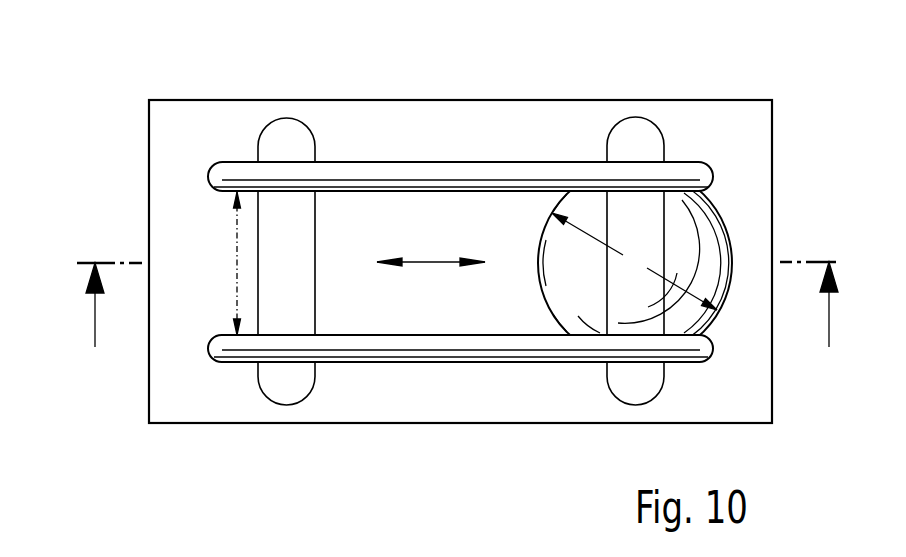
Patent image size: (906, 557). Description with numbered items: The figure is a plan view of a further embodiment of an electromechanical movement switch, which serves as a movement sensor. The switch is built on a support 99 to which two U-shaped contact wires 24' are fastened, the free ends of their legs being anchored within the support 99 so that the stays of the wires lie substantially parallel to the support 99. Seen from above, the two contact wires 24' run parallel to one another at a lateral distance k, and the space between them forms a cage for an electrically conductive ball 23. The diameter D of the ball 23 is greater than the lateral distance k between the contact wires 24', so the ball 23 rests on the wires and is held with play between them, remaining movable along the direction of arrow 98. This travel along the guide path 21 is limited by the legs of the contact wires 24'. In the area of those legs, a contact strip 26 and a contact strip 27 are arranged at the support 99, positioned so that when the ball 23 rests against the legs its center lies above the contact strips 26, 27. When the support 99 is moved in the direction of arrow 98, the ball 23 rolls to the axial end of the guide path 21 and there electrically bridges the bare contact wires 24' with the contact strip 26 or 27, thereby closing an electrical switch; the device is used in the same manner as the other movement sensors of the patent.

The guide path 21 is at (462, 243).
The ball 23 is at (710, 227).
The U-shaped contact wires 24' is at (460, 258).
The contact strip 26 is at (287, 135).
The contact strip 27 is at (637, 133).
The arrow indicating direction of movement 98 is at (433, 262).
The support 99 is at (737, 115).
The lateral distance of the contact wires k is at (237, 263).
The diameter of the ball D is at (634, 261).